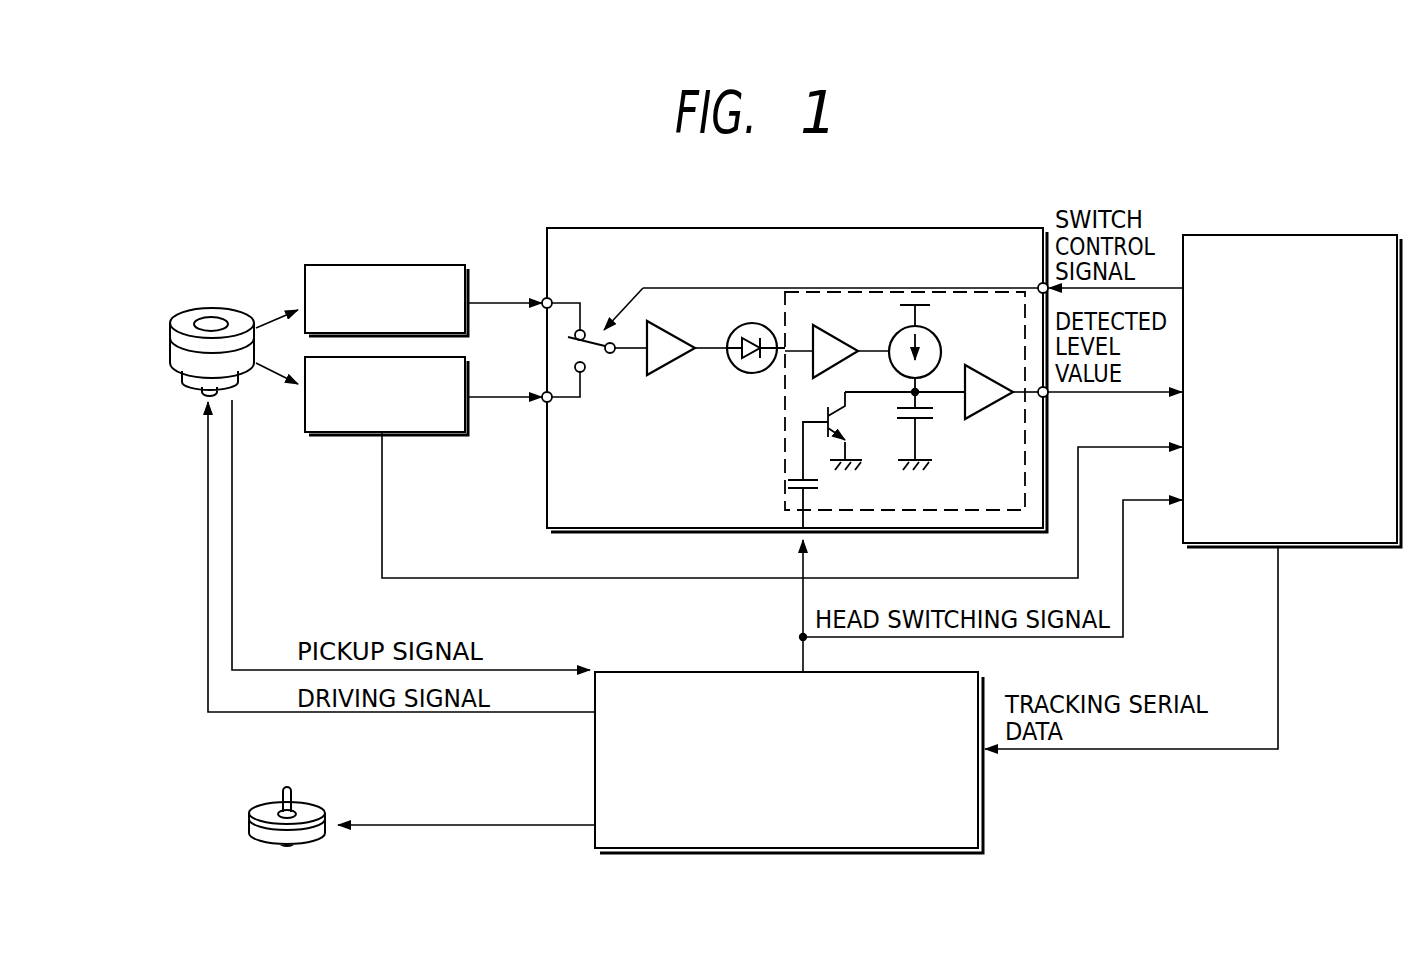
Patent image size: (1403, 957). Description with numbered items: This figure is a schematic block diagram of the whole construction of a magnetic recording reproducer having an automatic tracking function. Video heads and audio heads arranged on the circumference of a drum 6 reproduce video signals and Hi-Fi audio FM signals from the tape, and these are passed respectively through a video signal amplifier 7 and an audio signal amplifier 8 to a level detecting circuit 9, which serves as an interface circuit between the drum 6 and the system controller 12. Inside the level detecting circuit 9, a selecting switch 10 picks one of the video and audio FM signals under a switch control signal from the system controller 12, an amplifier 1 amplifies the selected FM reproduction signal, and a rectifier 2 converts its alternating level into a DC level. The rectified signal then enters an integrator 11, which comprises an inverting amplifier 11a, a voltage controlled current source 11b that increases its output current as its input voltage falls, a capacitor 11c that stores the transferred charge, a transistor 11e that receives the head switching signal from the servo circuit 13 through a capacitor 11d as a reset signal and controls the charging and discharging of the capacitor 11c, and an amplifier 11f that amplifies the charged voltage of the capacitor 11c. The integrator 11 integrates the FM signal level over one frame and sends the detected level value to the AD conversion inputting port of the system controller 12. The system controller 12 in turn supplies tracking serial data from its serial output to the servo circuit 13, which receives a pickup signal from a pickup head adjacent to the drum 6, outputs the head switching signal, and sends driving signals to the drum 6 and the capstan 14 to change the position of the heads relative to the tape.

The amplifier 1 is at (672, 335).
The rectifier 2 is at (748, 325).
The drum 6 is at (170, 335).
The video signal amplifier 7 is at (450, 265).
The audio signal amplifier 8 is at (470, 357).
The level detecting circuit 9 is at (837, 228).
The selecting switch 10 is at (598, 358).
The integrator 11 is at (775, 436).
The inverting amplifier 11a is at (840, 338).
The voltage controlled current source 11b is at (938, 338).
The capacitor 11c is at (925, 418).
The capacitor 11d is at (820, 484).
The transistor 11e is at (838, 432).
The amplifier 11f is at (995, 376).
The system controller 12 is at (1318, 235).
The servo circuit 13 is at (975, 690).
The capstan 14 is at (272, 808).